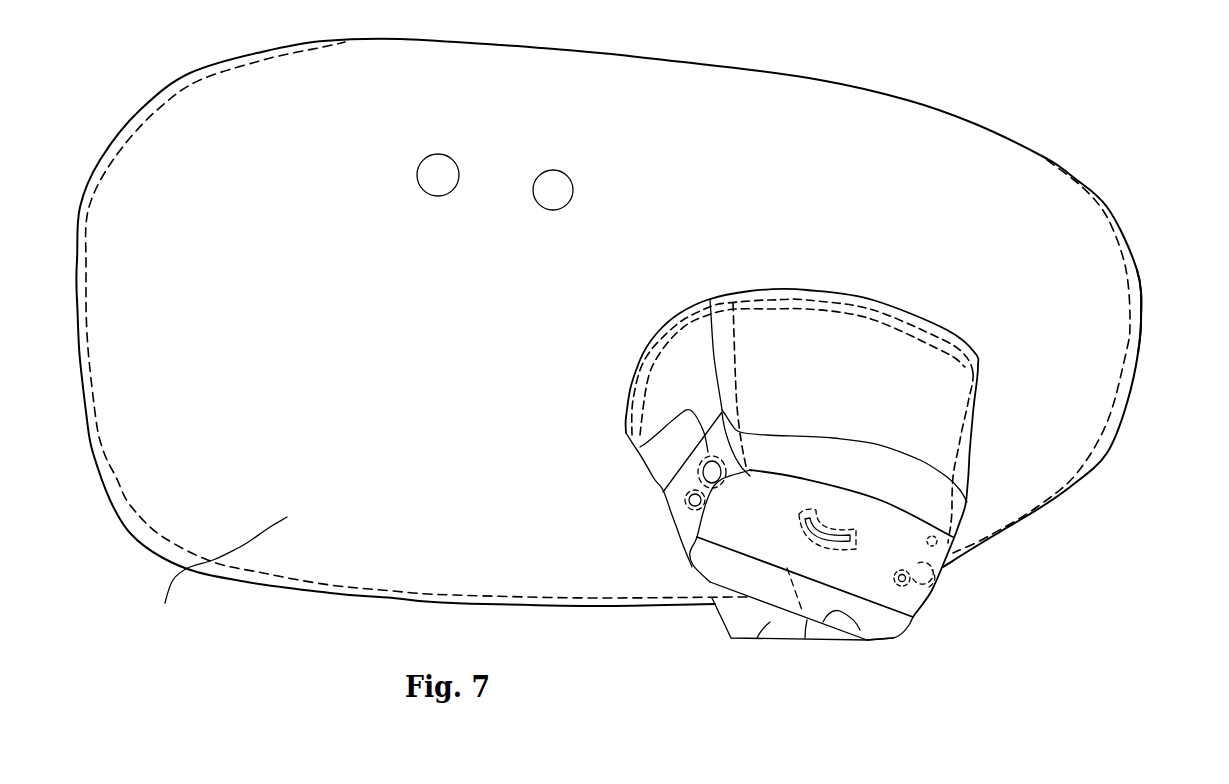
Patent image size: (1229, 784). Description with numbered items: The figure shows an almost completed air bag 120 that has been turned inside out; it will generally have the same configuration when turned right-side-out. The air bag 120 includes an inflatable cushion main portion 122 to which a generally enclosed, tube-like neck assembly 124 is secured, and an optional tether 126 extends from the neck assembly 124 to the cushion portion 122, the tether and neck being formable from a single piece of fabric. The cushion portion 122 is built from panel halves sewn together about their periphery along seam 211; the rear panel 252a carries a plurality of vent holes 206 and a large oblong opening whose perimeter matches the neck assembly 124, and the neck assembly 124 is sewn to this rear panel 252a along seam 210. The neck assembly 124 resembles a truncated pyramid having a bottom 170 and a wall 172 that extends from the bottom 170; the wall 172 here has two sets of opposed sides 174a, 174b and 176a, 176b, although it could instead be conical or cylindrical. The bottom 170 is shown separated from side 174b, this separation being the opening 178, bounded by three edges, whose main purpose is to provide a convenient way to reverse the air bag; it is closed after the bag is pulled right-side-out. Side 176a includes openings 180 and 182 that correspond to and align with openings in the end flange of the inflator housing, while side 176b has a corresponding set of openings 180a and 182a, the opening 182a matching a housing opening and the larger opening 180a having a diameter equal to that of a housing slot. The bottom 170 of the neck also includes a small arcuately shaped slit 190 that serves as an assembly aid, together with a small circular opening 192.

The air bag 120 is at (838, 100).
The inflatable cushion main portion 122 is at (708, 113).
The neck assembly 124 is at (773, 322).
The tether 126 is at (749, 642).
The bottom 170 is at (733, 525).
The wall 172 is at (674, 407).
The side 174a is at (822, 318).
The side 174b is at (867, 642).
The side 176a is at (677, 373).
The side 176b is at (978, 448).
The opening 178 is at (713, 560).
The opening 180 is at (711, 461).
The opening 180a is at (940, 586).
The opening 182 is at (688, 498).
The opening 182a is at (945, 549).
The slit 190 is at (826, 530).
The circular opening 192 is at (896, 578).
The vent holes 206 is at (535, 170).
The seam 210 is at (868, 315).
The seam 211 is at (1141, 347).
The rear panel 252a is at (215, 575).